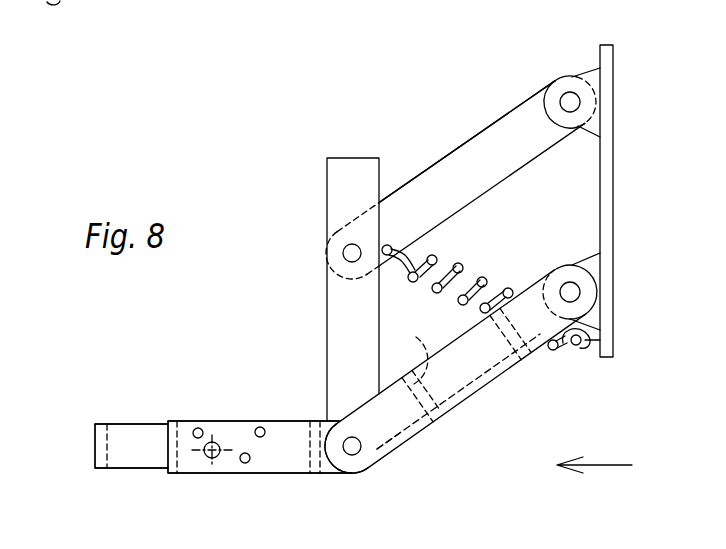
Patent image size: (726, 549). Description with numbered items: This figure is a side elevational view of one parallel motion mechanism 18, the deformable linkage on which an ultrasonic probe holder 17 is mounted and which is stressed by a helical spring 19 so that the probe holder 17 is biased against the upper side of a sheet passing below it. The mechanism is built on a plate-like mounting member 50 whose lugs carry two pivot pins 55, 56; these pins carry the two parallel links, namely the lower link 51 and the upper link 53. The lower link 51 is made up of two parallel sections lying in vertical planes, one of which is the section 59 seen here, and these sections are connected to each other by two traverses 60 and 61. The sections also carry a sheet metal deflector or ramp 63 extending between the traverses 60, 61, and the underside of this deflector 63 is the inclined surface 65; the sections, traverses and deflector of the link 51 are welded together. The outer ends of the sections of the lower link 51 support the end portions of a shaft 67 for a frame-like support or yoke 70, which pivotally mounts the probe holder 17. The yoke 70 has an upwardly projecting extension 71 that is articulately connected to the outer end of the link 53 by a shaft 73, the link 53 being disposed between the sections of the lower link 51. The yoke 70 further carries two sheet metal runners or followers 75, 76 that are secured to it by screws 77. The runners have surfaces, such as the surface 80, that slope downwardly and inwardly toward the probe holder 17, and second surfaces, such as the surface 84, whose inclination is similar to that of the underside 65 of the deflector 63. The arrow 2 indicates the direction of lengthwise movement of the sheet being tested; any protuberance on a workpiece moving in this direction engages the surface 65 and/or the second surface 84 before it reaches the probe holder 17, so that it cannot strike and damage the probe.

The direction of lengthwise movement 2 is at (595, 467).
The probe holder 17 is at (182, 455).
The parallel motion mechanism 18 is at (461, 116).
The helical spring 19 is at (481, 280).
The mounting member 50 is at (607, 44).
The lower link 51 is at (508, 384).
The link 53 is at (511, 106).
The pivot pin 55 is at (583, 291).
The pivot pin 56 is at (582, 101).
The section 59 is at (410, 368).
The traverse 60 is at (423, 350).
The traverse 61 is at (507, 296).
The deflector 63 is at (472, 334).
The underside of deflector 65 is at (452, 412).
The shaft 67 is at (381, 450).
The yoke 70 is at (95, 426).
The extension 71 is at (336, 181).
The shaft 73 is at (345, 257).
The runner 75 is at (221, 16).
The runner 76 is at (170, 472).
The screws 77 is at (243, 452).
The inclined surface 80 is at (293, 470).
The second surface 84 is at (413, 437).